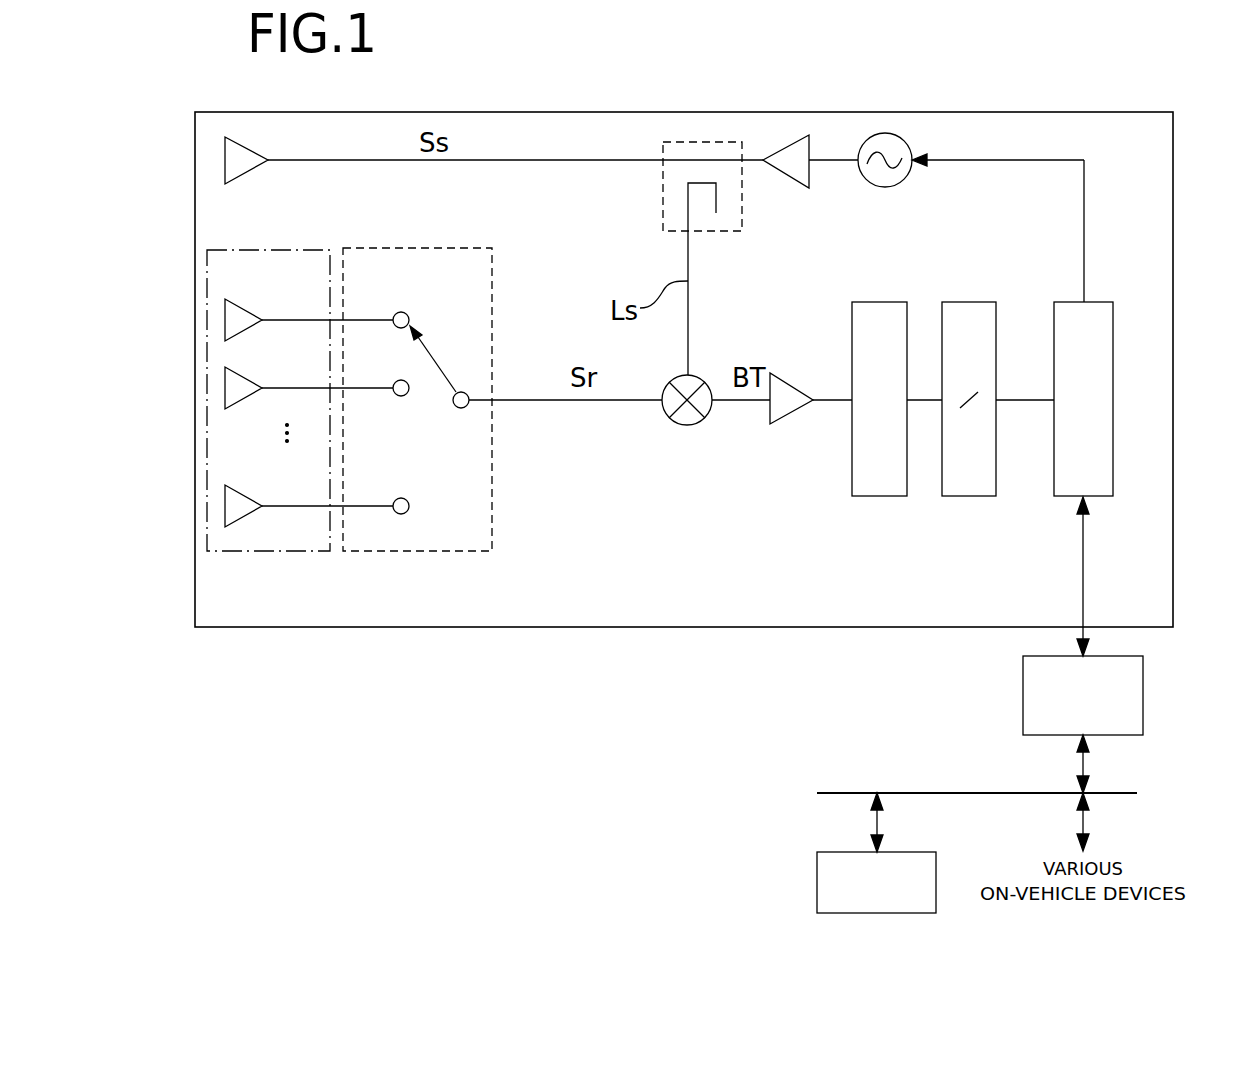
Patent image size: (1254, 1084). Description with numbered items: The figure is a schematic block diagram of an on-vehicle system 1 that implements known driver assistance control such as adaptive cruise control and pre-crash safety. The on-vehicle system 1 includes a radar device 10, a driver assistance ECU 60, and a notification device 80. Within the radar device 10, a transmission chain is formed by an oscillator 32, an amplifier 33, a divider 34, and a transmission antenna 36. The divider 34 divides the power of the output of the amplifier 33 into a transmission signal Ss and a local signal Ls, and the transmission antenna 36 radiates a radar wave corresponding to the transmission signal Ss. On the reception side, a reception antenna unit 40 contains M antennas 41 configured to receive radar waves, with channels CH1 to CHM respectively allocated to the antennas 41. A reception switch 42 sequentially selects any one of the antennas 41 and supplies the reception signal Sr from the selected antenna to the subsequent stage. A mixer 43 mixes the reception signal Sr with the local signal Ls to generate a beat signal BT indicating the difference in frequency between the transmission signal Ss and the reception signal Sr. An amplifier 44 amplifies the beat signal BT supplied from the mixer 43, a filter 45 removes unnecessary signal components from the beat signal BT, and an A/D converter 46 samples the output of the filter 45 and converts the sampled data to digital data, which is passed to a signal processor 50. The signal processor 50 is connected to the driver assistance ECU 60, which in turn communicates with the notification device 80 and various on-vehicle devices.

The on-vehicle system 1 is at (885, 88).
The radar device 10 is at (1173, 540).
The oscillator 32 is at (897, 187).
The amplifier 33 is at (795, 178).
The divider 34 is at (660, 178).
The transmission antenna 36 is at (242, 180).
The reception antenna unit 40 is at (305, 557).
The antennas 41 is at (247, 308).
The reception switch 42 is at (435, 557).
The mixer 43 is at (688, 425).
The amplifier 44 is at (782, 417).
The filter 45 is at (882, 497).
The A/D converter 46 is at (972, 497).
The signal processor 50 is at (1113, 457).
The driver assistance electronic control unit (ECU) 60 is at (1143, 718).
The notification device 80 is at (817, 857).